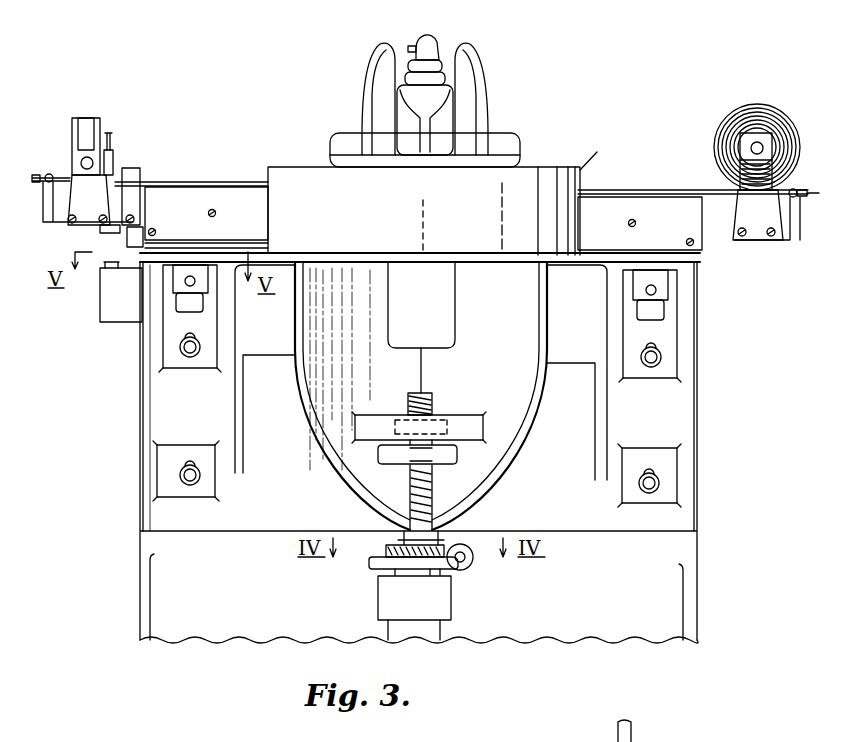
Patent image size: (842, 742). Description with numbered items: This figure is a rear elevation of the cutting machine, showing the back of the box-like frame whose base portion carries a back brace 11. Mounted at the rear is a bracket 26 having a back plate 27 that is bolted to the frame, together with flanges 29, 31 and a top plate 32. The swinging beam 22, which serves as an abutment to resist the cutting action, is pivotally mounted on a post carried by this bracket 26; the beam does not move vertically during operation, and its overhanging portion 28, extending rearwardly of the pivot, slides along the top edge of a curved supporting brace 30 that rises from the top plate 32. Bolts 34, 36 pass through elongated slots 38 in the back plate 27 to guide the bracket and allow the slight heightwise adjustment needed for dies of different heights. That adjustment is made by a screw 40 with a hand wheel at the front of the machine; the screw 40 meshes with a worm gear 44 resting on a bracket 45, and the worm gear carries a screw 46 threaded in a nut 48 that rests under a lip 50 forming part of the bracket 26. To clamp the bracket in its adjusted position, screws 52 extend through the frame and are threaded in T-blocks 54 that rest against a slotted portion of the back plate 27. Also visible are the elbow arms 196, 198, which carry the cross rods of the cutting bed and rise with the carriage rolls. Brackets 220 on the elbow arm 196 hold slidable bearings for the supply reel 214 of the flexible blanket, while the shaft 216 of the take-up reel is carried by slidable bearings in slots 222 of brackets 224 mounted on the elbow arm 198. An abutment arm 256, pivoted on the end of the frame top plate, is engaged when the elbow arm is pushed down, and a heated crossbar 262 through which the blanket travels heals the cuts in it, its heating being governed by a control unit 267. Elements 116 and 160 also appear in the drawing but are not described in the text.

The back brace 11 is at (698, 600).
The swinging beam 22 is at (470, 100).
The bracket 26 is at (399, 346).
The back plate 27 is at (686, 412).
The overhanging portion 28 is at (455, 158).
The flange 29 is at (236, 405).
The curved supporting brace 30 is at (590, 202).
The flange 31 is at (308, 378).
The top plate 32 is at (367, 257).
The bolt 34 is at (197, 345).
The bolt 36 is at (180, 477).
The elongated slot 38 is at (188, 465).
The screw 40 is at (468, 568).
The worm gear 44 is at (448, 543).
The bracket 45 is at (378, 610).
The screw 46 is at (422, 398).
The nut 48 is at (393, 455).
The lip 50 is at (460, 425).
The screw 52 is at (190, 276).
The T-block 54 is at (196, 290).
The right rail 116 is at (613, 197).
The knob 160 is at (440, 48).
The elbow arm 196 is at (790, 243).
The elbow arm 198 is at (48, 205).
The supply reel 214 is at (757, 108).
The shaft 216 is at (93, 162).
The bracket 220 is at (750, 202).
The slot 222 is at (85, 138).
The bracket 224 is at (95, 192).
The abutment arm 256 is at (143, 236).
The crossbar 262 is at (130, 175).
The control unit 267 is at (100, 306).